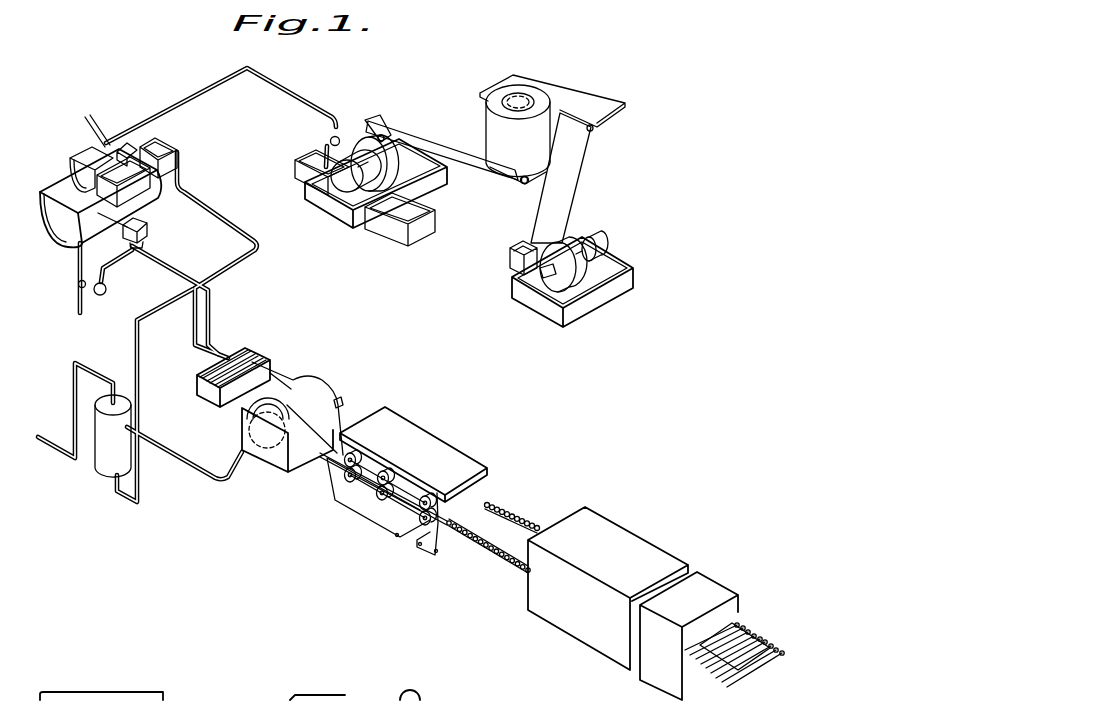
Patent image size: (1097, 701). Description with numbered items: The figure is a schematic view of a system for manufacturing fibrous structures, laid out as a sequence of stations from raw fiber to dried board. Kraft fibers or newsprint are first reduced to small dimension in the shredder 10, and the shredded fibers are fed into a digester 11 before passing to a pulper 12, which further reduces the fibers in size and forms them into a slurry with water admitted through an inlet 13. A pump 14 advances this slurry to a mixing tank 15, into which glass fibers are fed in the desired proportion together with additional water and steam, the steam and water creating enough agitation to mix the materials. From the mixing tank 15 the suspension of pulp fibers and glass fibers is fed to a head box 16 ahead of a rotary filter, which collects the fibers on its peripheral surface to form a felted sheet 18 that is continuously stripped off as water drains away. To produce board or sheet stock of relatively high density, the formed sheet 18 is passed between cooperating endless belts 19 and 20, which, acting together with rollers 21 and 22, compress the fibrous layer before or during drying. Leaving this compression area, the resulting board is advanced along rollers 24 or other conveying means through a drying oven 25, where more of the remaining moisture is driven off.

The shredder 10 is at (611, 260).
The digester 11 is at (512, 160).
The pulper 12 is at (342, 182).
The inlet 13 is at (378, 120).
The pump 14 is at (330, 136).
The mixing tank 15 is at (108, 140).
The head box 16 is at (262, 358).
The felted sheet 18 is at (337, 422).
The endless belt 19 is at (427, 437).
The endless belt 20 is at (383, 518).
The roller 21 is at (343, 463).
The roller 22 is at (347, 476).
The rollers 24 is at (528, 512).
The drying oven 25 is at (603, 528).